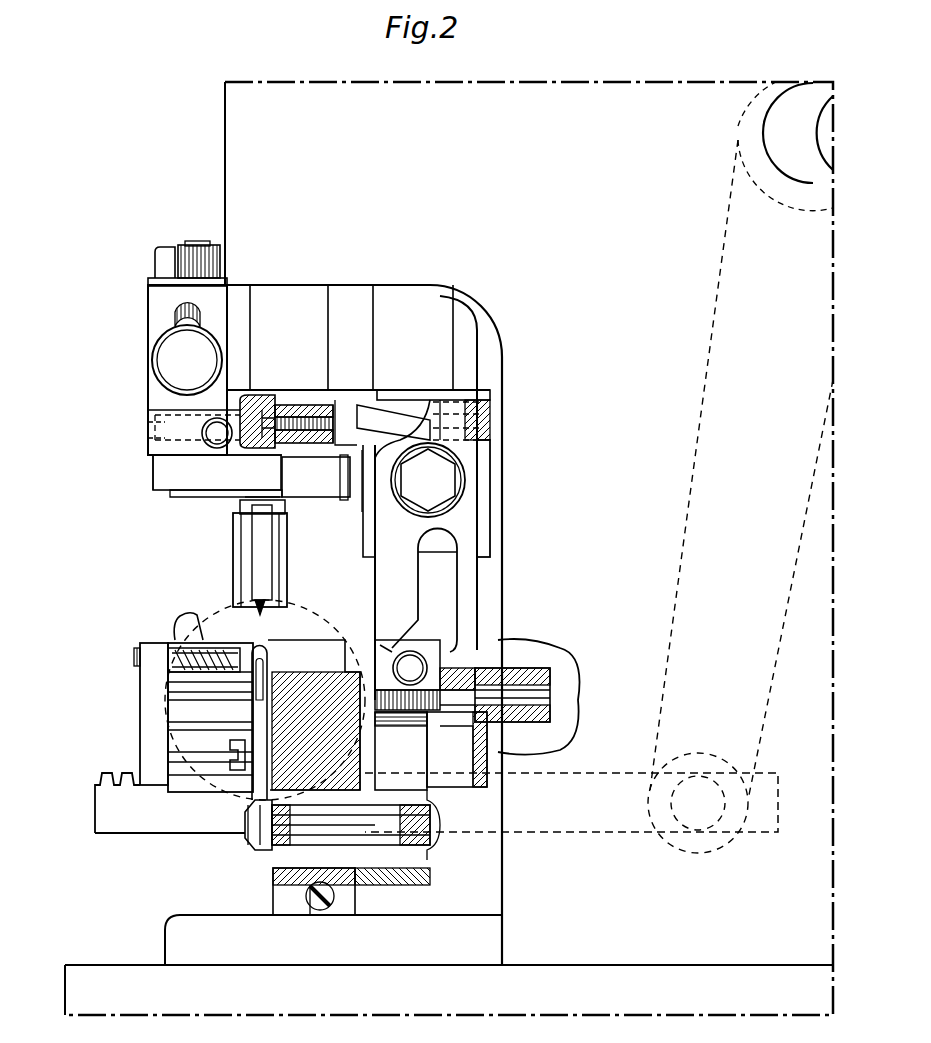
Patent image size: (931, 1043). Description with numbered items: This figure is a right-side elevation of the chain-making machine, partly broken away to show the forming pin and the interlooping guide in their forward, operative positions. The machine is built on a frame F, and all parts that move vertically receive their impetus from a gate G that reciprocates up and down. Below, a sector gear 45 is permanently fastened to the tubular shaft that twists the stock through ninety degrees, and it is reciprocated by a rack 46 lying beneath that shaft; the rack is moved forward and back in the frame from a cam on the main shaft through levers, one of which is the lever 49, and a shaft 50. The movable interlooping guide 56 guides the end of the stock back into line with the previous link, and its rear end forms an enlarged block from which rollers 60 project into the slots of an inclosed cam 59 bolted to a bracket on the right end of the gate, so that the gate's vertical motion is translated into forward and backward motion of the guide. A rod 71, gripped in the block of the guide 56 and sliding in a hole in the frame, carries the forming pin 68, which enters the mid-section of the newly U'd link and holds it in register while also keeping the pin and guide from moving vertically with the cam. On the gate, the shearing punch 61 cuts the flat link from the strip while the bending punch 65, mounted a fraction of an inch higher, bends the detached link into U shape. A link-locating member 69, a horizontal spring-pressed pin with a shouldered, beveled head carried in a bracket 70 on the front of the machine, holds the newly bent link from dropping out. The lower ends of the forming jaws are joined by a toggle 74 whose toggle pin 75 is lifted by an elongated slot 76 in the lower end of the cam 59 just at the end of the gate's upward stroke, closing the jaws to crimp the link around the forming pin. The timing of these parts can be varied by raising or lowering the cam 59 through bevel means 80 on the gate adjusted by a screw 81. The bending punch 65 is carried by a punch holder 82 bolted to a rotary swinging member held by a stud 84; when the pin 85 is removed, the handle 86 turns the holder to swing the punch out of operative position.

The frame F is at (449, 990).
The gate G is at (150, 305).
The sector gear 45 is at (205, 625).
The rack 46 is at (150, 825).
The lever 49 is at (742, 270).
The shaft 50 is at (785, 146).
The interlooping guide 56 is at (282, 648).
The inclosed cam 59 is at (457, 600).
The rollers 60 is at (400, 663).
The shearing punch 61 is at (240, 541).
The bending punch 65 is at (258, 560).
The forming pin 68 is at (300, 690).
The link-locating member 69 is at (215, 656).
The bracket 70 is at (150, 708).
The rod 71 is at (505, 692).
The toggle 74 is at (232, 752).
The toggle pin 75 is at (288, 826).
The elongated slot 76 is at (412, 752).
The bevel means 80 is at (385, 420).
The screw 81 is at (262, 405).
The punch holder 82 is at (160, 464).
The stud 84 is at (188, 243).
The pin 85 is at (187, 349).
The handle 86 is at (214, 442).